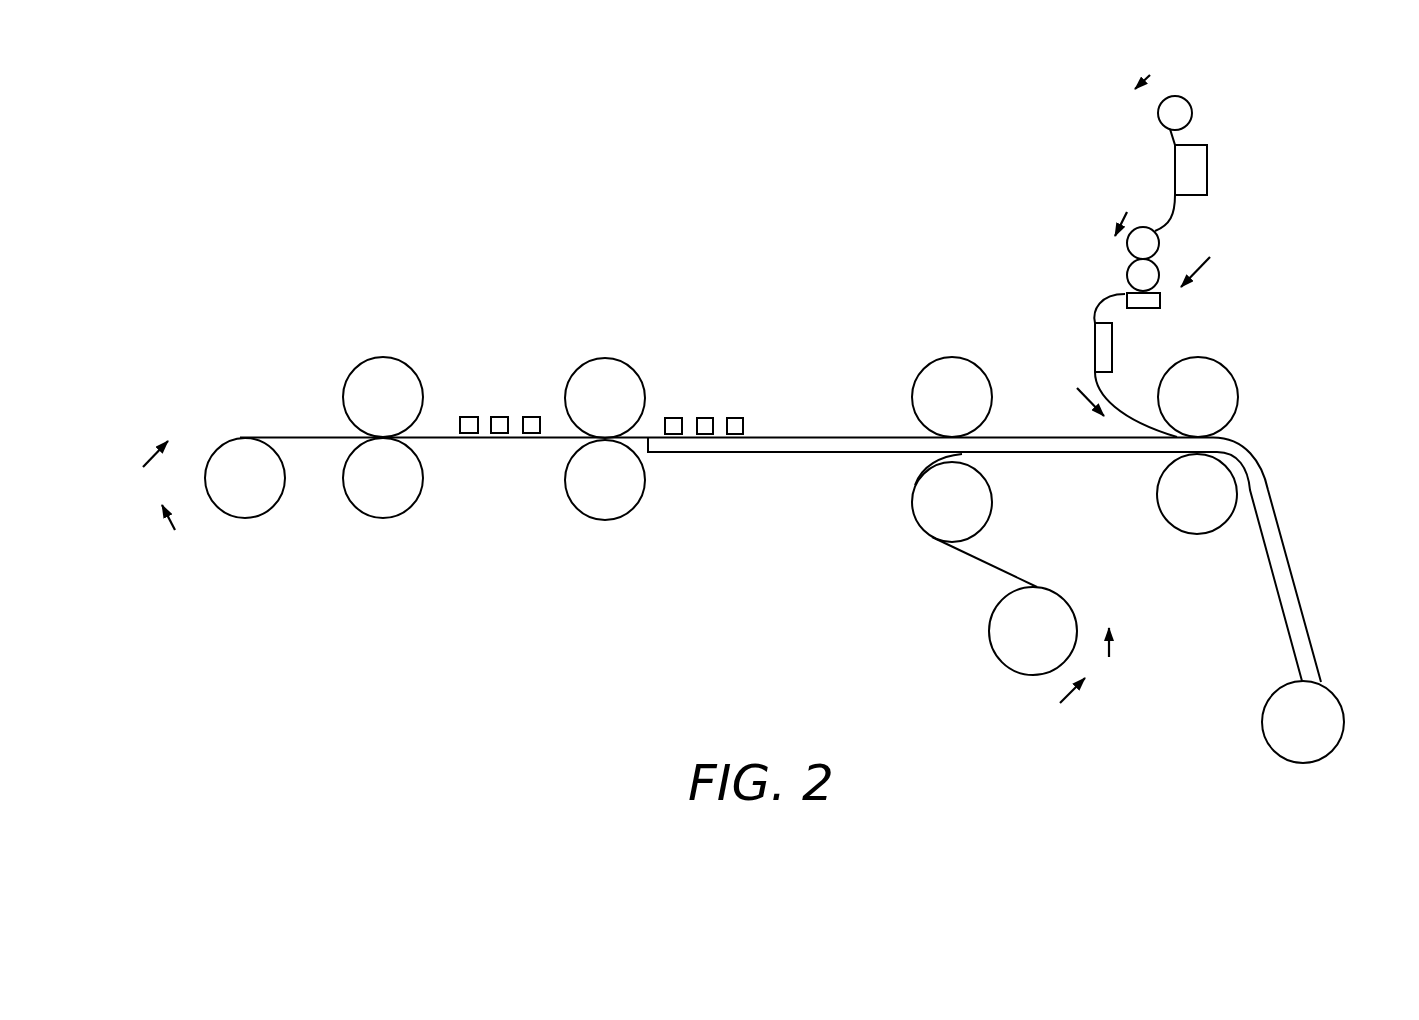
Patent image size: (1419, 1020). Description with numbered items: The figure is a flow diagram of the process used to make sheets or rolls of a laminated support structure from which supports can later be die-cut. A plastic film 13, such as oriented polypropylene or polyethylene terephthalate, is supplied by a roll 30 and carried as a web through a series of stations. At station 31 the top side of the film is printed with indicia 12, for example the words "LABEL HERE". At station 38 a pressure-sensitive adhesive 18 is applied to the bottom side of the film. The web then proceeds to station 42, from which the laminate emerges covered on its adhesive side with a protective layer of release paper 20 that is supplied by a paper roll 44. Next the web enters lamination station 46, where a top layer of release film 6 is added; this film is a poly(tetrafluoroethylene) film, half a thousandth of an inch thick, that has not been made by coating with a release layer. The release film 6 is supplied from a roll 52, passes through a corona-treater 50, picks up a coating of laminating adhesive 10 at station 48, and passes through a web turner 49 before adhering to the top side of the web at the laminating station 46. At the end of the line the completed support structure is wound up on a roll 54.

The release film 6 is at (1092, 383).
The laminating adhesive 10 is at (1118, 296).
The indicia 12 is at (469, 417).
The plastic film 13 is at (295, 435).
The pressure-sensitive adhesive 18 is at (760, 454).
The release paper 20 is at (973, 557).
The roll 30 is at (243, 517).
The printing station 31 is at (403, 517).
The adhesive application station 38 is at (612, 520).
The release paper application station 42 is at (945, 357).
The paper roll 44 is at (1032, 676).
The lamination station 46 is at (1190, 534).
The laminating adhesive station 48 is at (1127, 258).
The corona-treater 50 is at (1207, 170).
The roll 52 is at (1192, 110).
The web turner 49 is at (1112, 350).
The roll 54 is at (1330, 752).